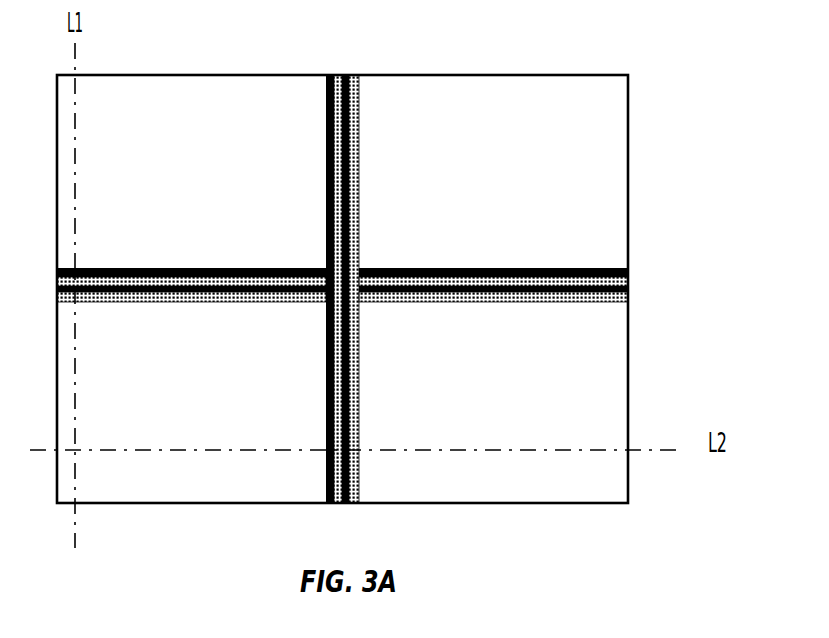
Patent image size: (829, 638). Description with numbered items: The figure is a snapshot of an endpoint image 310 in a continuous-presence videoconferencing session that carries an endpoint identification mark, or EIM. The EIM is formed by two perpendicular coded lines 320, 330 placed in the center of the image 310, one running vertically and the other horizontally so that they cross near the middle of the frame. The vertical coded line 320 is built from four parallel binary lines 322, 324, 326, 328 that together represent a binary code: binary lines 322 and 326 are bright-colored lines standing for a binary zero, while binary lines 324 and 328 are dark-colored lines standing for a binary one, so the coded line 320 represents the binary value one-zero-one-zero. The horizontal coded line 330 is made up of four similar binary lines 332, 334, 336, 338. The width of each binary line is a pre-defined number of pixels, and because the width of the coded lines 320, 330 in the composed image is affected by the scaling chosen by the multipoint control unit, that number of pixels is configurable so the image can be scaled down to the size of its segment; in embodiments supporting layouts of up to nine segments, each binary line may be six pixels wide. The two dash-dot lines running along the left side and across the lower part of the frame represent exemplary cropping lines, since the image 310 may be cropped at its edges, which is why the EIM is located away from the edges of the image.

The endpoint image 310 is at (380, 289).
The coded line 320 is at (361, 258).
The binary line 322 is at (387, 271).
The binary line 324 is at (384, 258).
The binary line 326 is at (302, 258).
The binary line 328 is at (302, 271).
The coded line 330 is at (393, 275).
The binary line 332 is at (382, 312).
The binary line 334 is at (382, 257).
The binary line 336 is at (393, 297).
The binary line 338 is at (393, 275).